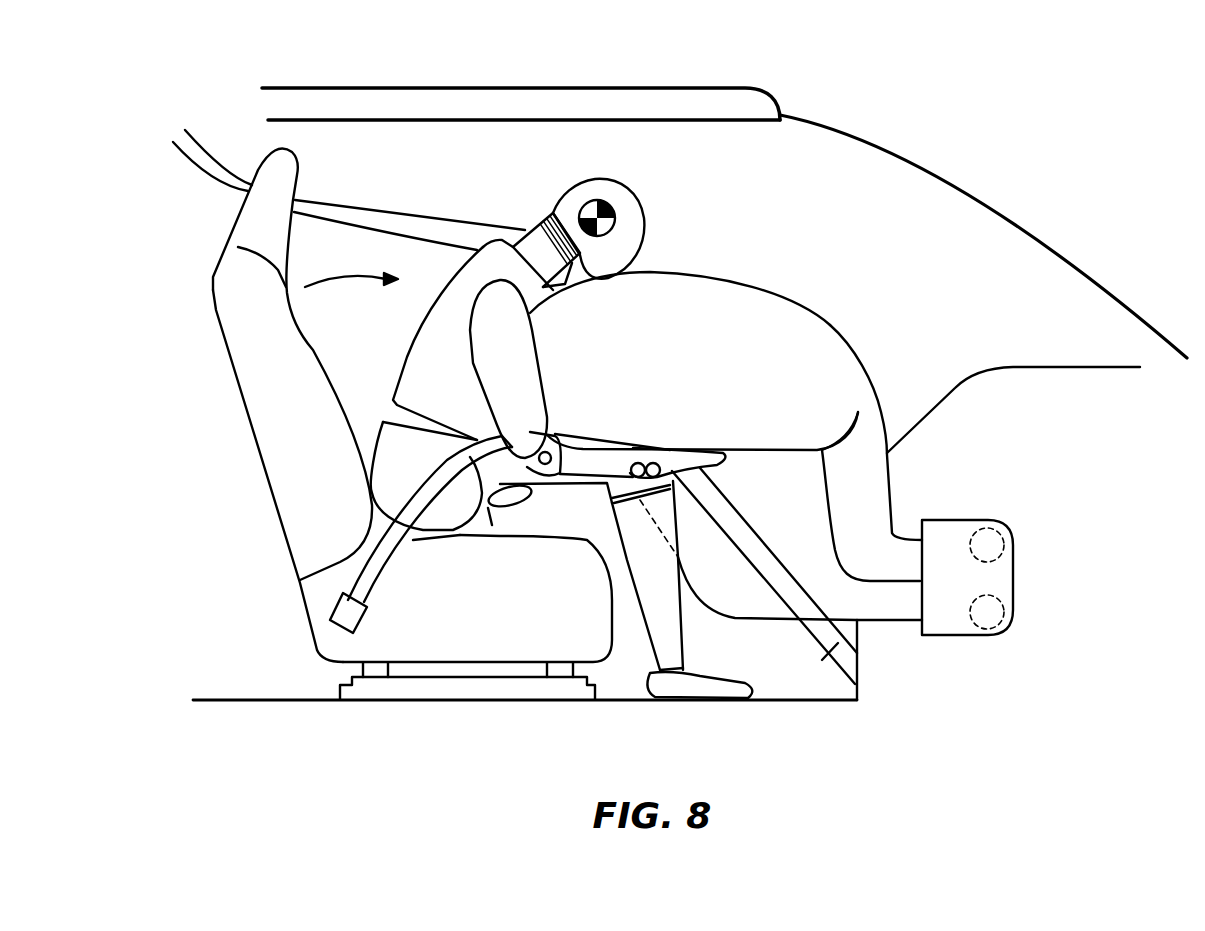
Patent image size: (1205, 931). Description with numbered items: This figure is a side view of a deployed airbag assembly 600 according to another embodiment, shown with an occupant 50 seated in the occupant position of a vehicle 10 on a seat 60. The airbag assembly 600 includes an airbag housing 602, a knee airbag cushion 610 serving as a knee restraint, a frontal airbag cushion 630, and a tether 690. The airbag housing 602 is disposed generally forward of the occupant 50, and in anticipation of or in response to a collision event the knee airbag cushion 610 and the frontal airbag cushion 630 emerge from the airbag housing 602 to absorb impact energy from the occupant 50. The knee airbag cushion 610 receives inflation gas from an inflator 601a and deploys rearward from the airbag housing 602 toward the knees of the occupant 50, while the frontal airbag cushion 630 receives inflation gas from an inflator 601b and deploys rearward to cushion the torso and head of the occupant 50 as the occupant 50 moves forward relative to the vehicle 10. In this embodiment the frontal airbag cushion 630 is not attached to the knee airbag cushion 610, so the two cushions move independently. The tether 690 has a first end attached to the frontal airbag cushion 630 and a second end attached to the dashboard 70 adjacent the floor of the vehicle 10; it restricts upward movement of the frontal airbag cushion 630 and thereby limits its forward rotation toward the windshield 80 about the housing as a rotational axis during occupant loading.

The vehicle 10 is at (1003, 186).
The windshield 80 is at (1072, 268).
The dashboard 70 is at (1034, 431).
The vehicle seat 60 is at (487, 616).
The occupant 50 is at (459, 380).
The airbag assembly 600 is at (864, 353).
The frontal airbag cushion 630 is at (705, 376).
The knee airbag cushion 610 is at (798, 528).
The tether 690 is at (830, 640).
The airbag housing 602 is at (1014, 620).
The inflator 601a is at (993, 632).
The inflator 601b is at (993, 543).